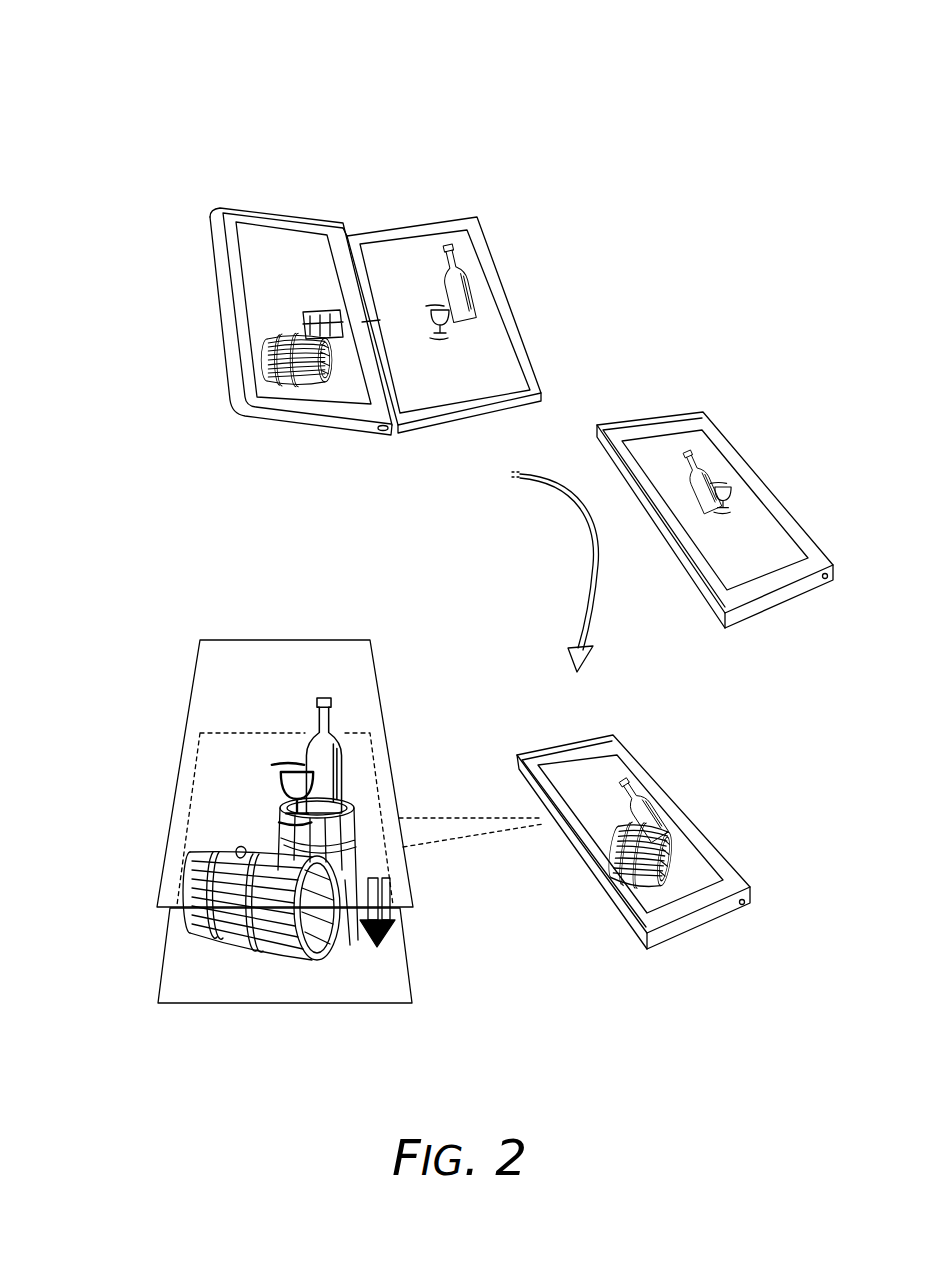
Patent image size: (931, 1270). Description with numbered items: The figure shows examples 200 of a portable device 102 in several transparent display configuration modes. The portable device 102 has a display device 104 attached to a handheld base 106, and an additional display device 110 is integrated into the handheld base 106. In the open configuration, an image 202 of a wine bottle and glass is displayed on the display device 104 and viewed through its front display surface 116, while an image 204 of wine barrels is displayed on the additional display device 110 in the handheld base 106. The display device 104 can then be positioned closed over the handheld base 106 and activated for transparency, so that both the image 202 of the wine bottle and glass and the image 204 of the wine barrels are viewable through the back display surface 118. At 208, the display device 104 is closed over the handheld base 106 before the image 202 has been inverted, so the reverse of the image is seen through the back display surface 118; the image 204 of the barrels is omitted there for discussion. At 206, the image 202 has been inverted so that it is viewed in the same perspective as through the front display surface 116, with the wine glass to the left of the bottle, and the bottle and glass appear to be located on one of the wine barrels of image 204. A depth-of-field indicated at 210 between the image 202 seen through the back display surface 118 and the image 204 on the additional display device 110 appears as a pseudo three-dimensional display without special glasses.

The examples 200 is at (735, 77).
The portable device 102 is at (358, 193).
The display device 104 is at (446, 222).
The handheld base 106 is at (308, 428).
The additional display device 110 is at (268, 282).
The front display surface 116 is at (391, 259).
The back display surface 118 is at (504, 371).
The image of a wine bottle and glass 202 is at (466, 268).
The image of wine barrels 204 is at (325, 380).
The illustrated example with inverted image 206 is at (728, 814).
The closed configuration before image inversion 208 is at (684, 396).
The depth-of-field 210 is at (393, 969).